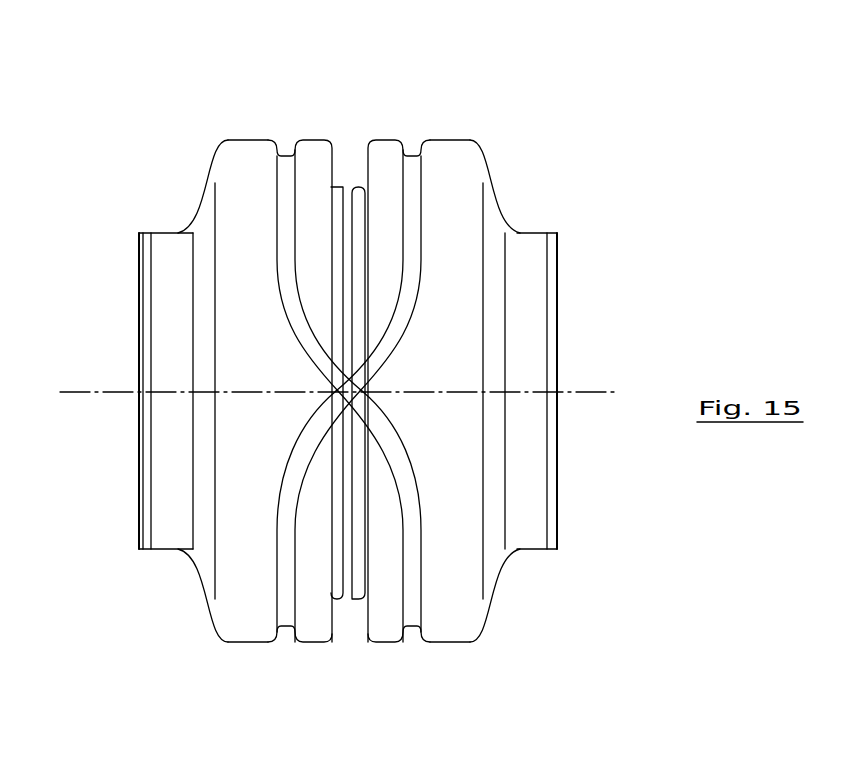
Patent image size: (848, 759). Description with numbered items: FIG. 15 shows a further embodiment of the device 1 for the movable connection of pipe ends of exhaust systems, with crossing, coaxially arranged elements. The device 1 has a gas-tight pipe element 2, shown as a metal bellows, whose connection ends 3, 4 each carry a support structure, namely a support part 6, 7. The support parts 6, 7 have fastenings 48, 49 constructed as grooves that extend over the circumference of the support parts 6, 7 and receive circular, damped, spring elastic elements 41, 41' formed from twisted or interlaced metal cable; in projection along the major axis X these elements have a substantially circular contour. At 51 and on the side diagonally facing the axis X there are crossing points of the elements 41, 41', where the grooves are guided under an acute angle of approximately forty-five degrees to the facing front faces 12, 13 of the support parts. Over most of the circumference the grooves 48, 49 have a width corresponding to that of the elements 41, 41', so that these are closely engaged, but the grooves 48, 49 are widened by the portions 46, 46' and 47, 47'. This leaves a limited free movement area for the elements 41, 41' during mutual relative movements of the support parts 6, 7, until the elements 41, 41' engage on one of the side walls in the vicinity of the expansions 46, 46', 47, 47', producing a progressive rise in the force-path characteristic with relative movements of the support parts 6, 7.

The device 1 is at (203, 668).
The pipe element 2 is at (344, 192).
The connection end 3 is at (142, 233).
The connection end 4 is at (552, 232).
The support part 6 is at (220, 158).
The support part 7 is at (478, 156).
The front face 12 is at (337, 187).
The front face 13 is at (361, 187).
The spring elastic element 41 is at (312, 358).
The spring elastic element 41' is at (412, 359).
The expansion 46 is at (314, 556).
The expansion 46' is at (384, 556).
The expansion 47 is at (211, 442).
The expansion 47' is at (403, 215).
The fastening 48 is at (289, 644).
The fastening 49 is at (410, 645).
The crossing point 51 is at (327, 391).
The major axis X is at (95, 393).